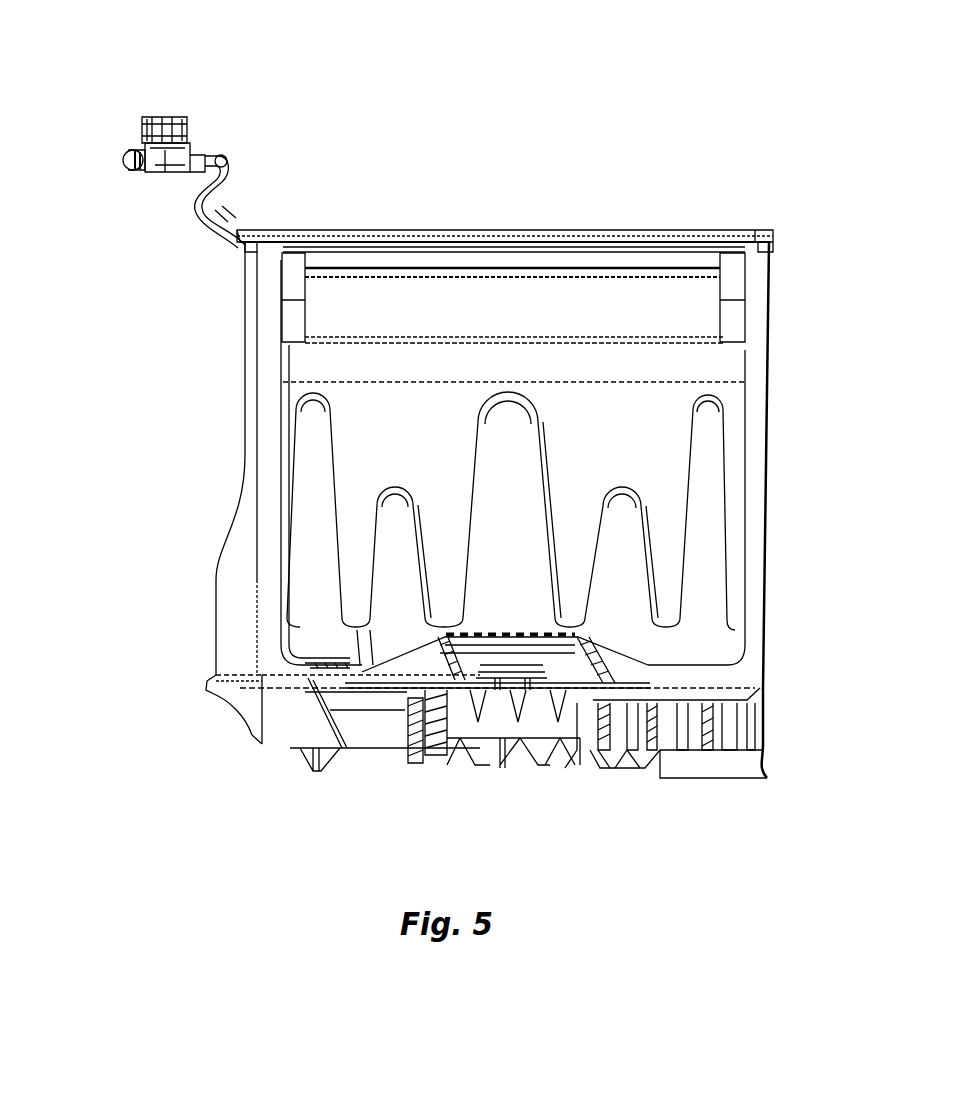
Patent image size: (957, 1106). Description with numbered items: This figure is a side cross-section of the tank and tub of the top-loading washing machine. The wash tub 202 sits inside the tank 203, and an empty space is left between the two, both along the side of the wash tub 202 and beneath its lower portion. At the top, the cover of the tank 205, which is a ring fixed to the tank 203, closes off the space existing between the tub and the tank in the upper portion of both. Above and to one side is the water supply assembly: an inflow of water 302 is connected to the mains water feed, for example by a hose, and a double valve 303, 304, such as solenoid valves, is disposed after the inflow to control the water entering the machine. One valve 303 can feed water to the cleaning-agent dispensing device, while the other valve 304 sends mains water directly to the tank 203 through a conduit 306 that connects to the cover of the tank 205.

The wash tub 202 is at (748, 412).
The tank 203 is at (763, 477).
The cover of the tank 205 is at (740, 233).
The inflow of water 302 is at (125, 158).
The valve 303 is at (165, 112).
The valve 304 is at (192, 82).
The conduit 306 is at (232, 212).